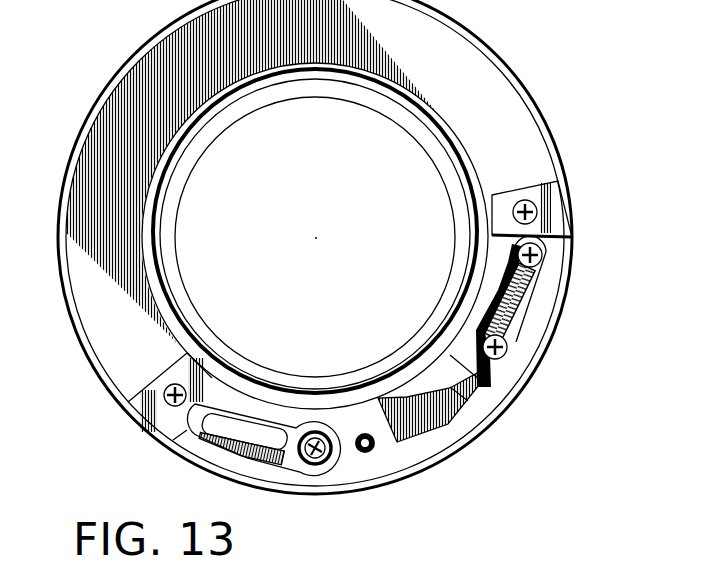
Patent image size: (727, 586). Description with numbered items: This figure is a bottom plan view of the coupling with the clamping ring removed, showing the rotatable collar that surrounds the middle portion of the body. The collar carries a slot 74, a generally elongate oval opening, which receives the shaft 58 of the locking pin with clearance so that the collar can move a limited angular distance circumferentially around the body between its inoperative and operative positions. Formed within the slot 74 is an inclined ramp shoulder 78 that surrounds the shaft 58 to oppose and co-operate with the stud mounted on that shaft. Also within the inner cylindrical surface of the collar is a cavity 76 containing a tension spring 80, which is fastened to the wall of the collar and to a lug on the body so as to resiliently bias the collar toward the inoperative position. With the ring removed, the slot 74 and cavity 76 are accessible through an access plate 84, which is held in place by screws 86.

The shaft 58 is at (343, 458).
The slot 74 is at (200, 447).
The cavity 76 is at (493, 397).
The inclined ramp shoulder 78 is at (242, 459).
The tension spring 80 is at (531, 308).
The access plate 84 is at (558, 222).
The screws 86 is at (537, 206).